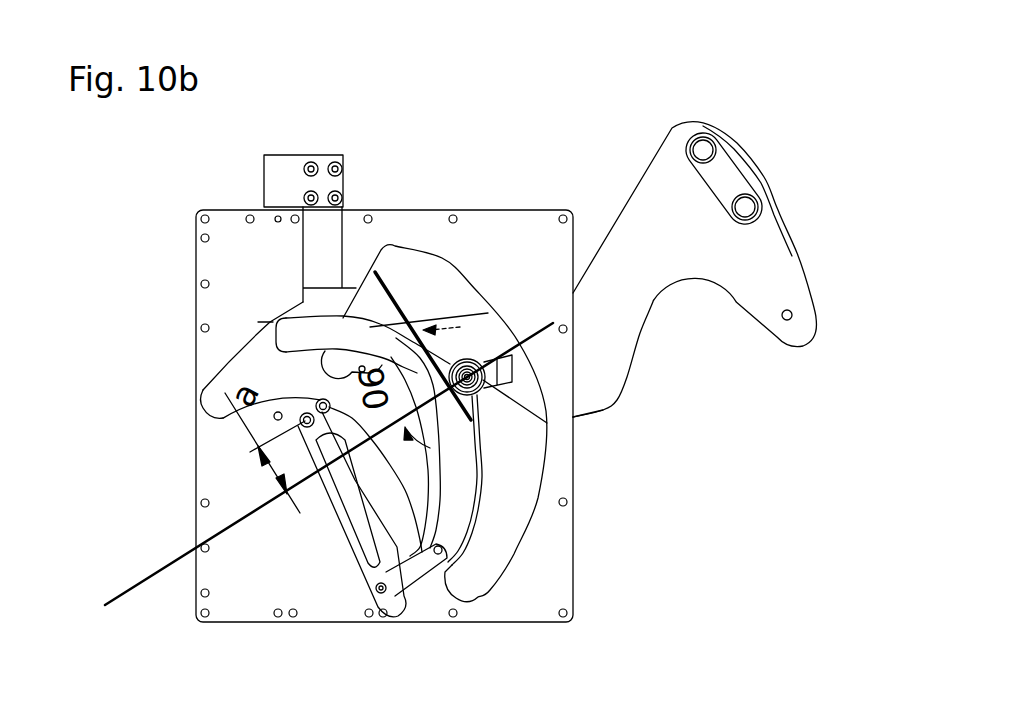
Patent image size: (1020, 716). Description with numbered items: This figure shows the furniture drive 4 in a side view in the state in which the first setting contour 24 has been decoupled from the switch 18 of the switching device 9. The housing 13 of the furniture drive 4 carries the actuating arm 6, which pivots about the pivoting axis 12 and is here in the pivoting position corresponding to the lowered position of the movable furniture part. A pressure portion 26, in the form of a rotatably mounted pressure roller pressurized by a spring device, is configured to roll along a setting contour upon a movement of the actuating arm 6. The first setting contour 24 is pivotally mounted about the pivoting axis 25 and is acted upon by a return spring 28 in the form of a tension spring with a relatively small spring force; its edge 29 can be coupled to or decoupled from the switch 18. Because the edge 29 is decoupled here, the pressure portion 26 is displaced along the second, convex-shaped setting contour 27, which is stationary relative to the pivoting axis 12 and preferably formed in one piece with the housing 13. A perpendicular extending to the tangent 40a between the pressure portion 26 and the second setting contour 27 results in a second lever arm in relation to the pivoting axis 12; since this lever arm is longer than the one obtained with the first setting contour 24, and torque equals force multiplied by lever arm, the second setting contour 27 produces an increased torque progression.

The furniture drive 4 is at (663, 355).
The actuating arm 6 is at (777, 268).
The switching device 9 is at (247, 179).
The pivoting axis 12 is at (320, 400).
The housing 13 is at (552, 588).
The switch 18 is at (318, 256).
The first setting contour 24 is at (290, 338).
The pivoting axis 25 is at (438, 556).
The pressure portion 26 is at (488, 396).
The second setting contour 27 is at (482, 472).
The return spring 28 is at (353, 525).
The edge 29 is at (273, 322).
The tangent 40a is at (390, 290).